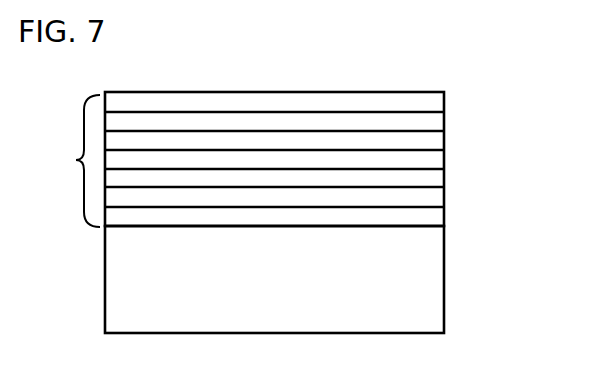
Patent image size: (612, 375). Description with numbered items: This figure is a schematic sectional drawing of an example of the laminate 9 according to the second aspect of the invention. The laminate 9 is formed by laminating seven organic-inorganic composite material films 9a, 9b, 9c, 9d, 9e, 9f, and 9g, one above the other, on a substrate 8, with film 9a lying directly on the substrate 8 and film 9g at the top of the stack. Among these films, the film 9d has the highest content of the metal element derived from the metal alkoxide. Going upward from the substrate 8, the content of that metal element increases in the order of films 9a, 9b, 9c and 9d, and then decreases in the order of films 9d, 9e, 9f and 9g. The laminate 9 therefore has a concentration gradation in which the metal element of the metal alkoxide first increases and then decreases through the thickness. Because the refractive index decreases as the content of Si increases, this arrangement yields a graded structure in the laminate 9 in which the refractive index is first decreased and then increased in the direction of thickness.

The substrate 8 is at (436, 278).
The laminate 9 is at (249, 159).
The organic-inorganic composite material film 9a is at (439, 221).
The organic-inorganic composite material film 9b is at (439, 200).
The organic-inorganic composite material film 9c is at (439, 181).
The organic-inorganic composite material film 9d is at (439, 160).
The organic-inorganic composite material film 9e is at (439, 142).
The organic-inorganic composite material film 9f is at (439, 121).
The organic-inorganic composite material film 9g is at (439, 99).